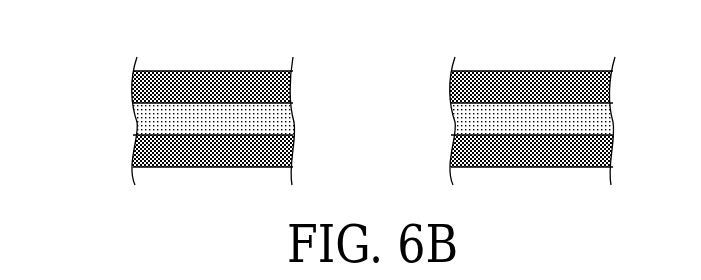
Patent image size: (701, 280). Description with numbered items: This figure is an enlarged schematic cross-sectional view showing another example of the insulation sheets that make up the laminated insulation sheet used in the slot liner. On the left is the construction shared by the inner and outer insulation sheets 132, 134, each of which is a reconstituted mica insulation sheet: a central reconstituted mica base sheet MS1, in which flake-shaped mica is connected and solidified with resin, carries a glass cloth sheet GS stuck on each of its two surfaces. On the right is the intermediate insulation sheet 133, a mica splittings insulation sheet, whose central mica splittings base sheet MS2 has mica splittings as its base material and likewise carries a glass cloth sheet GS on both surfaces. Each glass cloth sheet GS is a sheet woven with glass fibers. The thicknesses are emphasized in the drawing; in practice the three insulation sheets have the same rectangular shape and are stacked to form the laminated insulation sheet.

The insulation sheet 132 is at (172, 117).
The insulation sheet 134 is at (212, 136).
The insulation sheet 133 is at (498, 117).
The glass cloth sheet GS is at (213, 96).
The reconstituted mica base sheet MS1 is at (208, 117).
The mica splittings base sheet MS2 is at (520, 118).